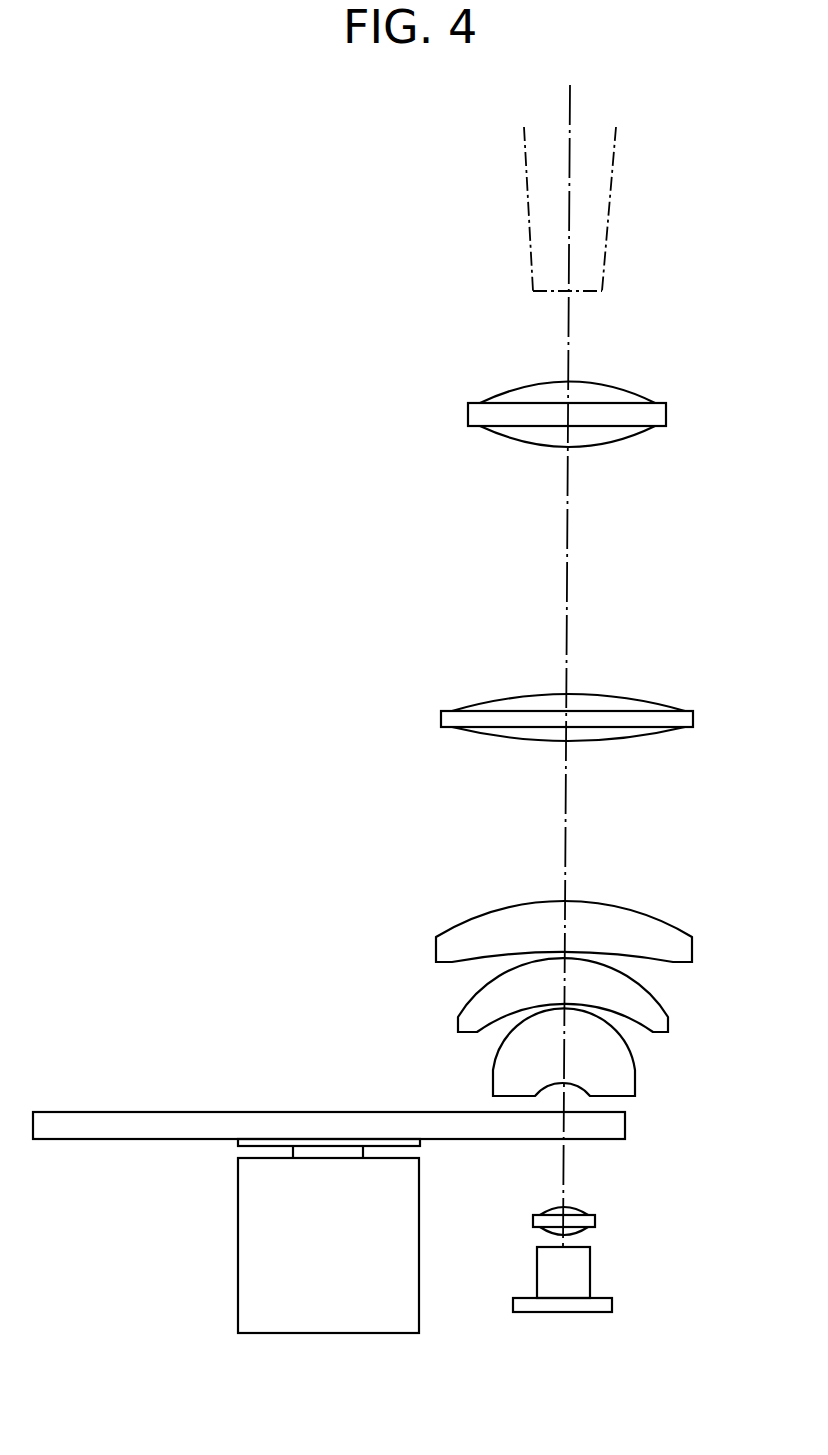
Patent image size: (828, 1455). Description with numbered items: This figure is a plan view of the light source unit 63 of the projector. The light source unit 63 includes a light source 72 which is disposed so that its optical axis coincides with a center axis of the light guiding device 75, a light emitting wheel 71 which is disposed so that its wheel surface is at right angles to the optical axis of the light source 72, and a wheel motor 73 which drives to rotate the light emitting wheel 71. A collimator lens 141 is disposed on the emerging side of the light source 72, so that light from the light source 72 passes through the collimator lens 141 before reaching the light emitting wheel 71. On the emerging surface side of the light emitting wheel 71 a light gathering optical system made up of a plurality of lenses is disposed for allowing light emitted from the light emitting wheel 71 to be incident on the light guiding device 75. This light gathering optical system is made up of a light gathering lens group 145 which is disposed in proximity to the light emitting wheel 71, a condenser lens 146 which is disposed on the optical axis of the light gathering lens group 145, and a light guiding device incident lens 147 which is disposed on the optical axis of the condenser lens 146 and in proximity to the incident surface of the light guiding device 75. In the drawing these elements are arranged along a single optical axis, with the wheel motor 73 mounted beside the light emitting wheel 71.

The light source unit 63 is at (224, 262).
The light guiding device 75 is at (545, 207).
The light guiding device incident lens 147 is at (480, 415).
The condenser lens 146 is at (452, 718).
The light gathering lens group 145 is at (434, 982).
The light emitting wheel 71 is at (172, 1110).
The wheel motor 73 is at (255, 1253).
The collimator lens 141 is at (583, 1222).
The light source 72 is at (600, 1307).